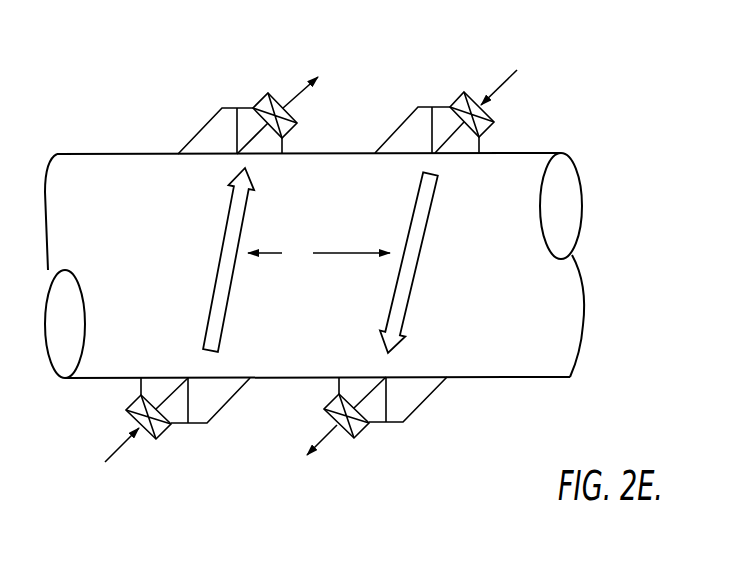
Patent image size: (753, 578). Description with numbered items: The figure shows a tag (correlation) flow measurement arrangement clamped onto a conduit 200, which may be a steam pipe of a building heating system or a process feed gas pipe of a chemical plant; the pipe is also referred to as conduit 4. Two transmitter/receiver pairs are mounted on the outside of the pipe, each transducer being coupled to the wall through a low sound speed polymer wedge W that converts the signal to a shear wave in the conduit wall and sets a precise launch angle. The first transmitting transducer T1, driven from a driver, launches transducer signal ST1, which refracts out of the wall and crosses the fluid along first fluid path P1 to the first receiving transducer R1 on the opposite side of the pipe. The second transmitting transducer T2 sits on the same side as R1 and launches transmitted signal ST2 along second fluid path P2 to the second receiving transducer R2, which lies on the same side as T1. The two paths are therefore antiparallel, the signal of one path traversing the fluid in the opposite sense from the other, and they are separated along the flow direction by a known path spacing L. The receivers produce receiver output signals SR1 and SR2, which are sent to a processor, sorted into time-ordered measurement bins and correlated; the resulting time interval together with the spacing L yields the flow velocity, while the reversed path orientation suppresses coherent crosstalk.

The conduit 200 is at (578, 354).
The conduit 4 is at (529, 340).
The wedge W is at (224, 108).
The first receiving transducer R1 is at (413, 430).
The second receiving transducer R2 is at (198, 122).
The first transmitting transducer T1 is at (405, 103).
The second transmitting transducer T2 is at (203, 435).
The receiver output signal SR1 is at (327, 485).
The receiver output signal SR2 is at (406, 60).
The transducer signal ST1 is at (542, 179).
The transmitted signal ST2 is at (106, 371).
The first fluid path P1 is at (427, 235).
The second fluid path P2 is at (225, 230).
The path spacing L is at (319, 255).